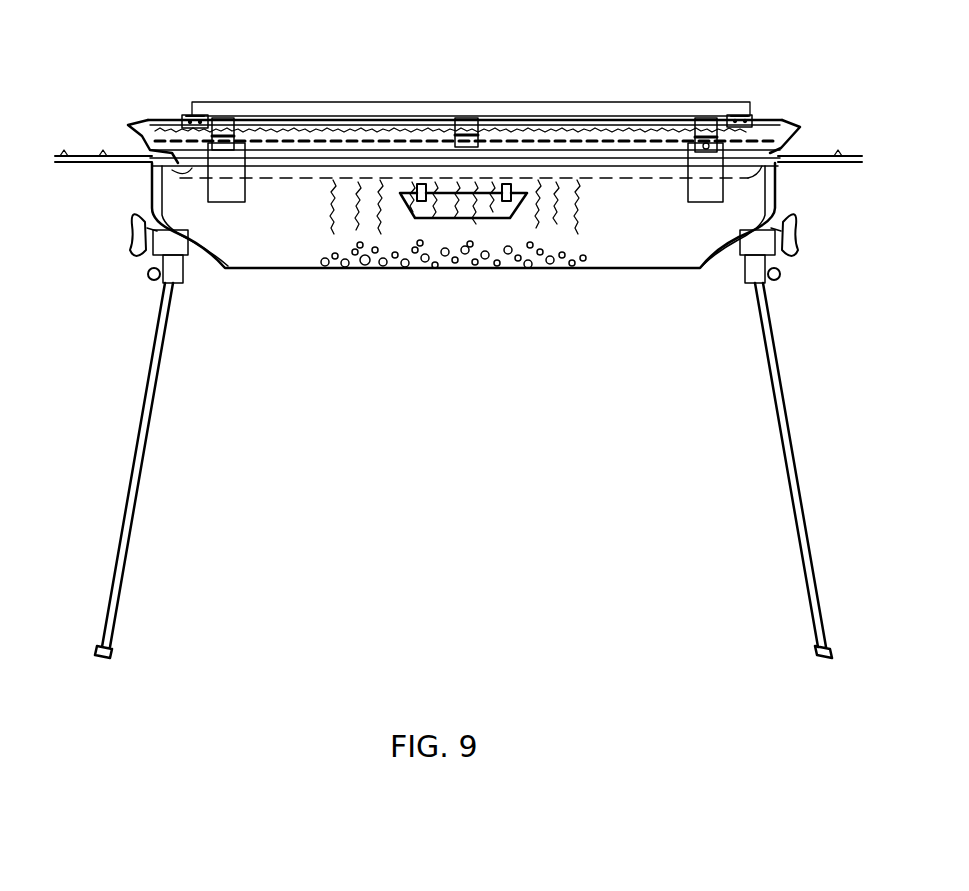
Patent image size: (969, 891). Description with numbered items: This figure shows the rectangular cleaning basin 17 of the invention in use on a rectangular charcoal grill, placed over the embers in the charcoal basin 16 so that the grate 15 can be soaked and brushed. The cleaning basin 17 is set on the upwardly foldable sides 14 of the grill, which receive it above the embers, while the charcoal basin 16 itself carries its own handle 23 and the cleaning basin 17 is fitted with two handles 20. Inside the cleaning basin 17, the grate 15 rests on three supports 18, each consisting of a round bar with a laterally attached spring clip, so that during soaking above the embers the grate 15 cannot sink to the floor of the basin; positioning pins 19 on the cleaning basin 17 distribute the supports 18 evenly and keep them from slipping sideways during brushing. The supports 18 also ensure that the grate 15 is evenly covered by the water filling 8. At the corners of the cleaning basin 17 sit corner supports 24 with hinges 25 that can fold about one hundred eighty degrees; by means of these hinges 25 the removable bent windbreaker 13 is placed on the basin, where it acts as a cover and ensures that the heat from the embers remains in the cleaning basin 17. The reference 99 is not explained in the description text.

The water filling 8 is at (317, 130).
The removable bent windbreaker 13 is at (423, 106).
The upwardly foldable sides for receiving grate 14 is at (97, 156).
The grate 15 is at (257, 168).
The charcoal basin 16 is at (557, 268).
The cleaning basin 17 is at (390, 150).
The supports for grate 18 is at (222, 128).
The positioning pins for grate 19 is at (467, 174).
The handle of grill basin 20 is at (136, 108).
The handle of charcoal basin 23 is at (473, 220).
The corner support for placement of removable windbreaker or cover plate 24 is at (190, 115).
The hinge for corner support 25 is at (201, 115).
The grate row 99 is at (593, 147).